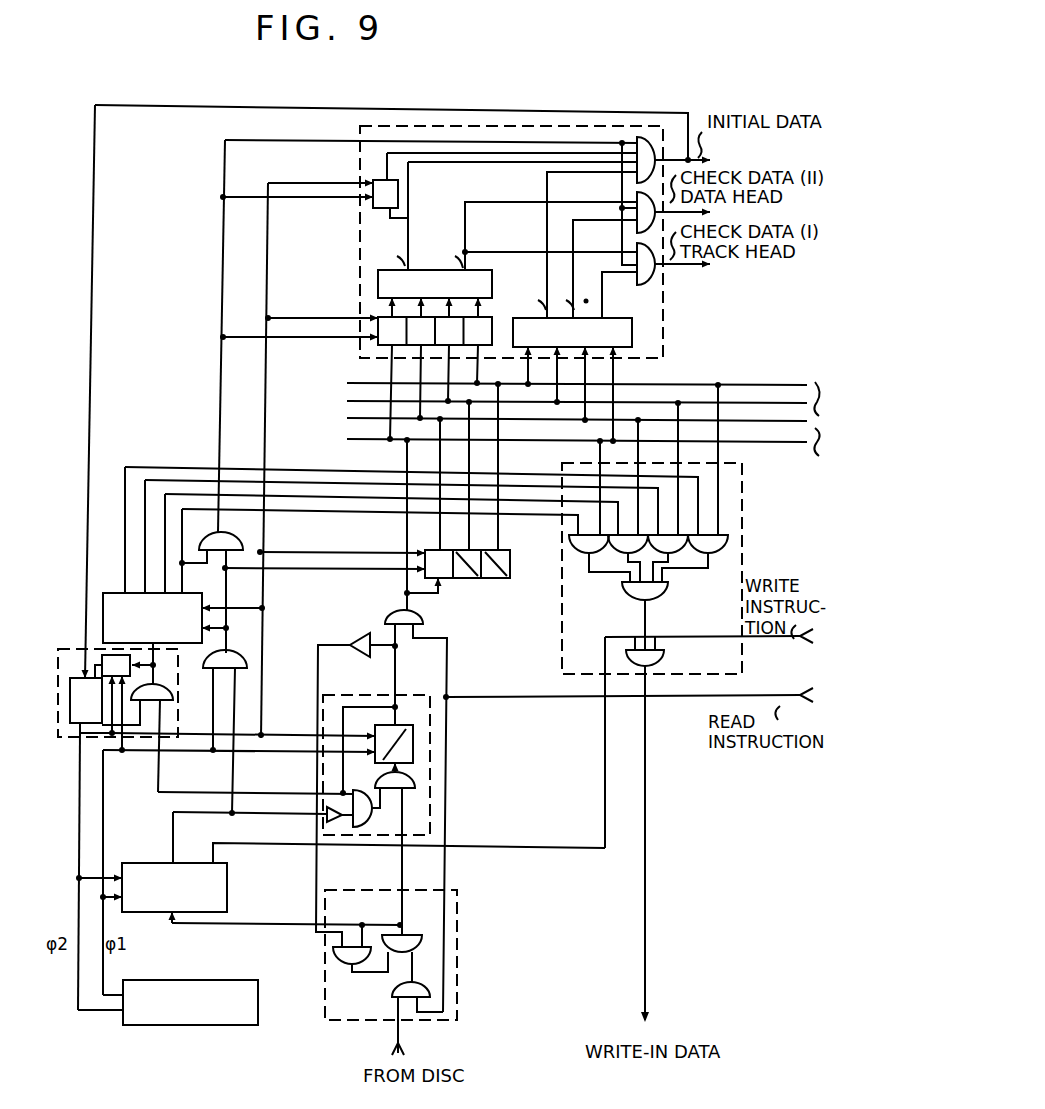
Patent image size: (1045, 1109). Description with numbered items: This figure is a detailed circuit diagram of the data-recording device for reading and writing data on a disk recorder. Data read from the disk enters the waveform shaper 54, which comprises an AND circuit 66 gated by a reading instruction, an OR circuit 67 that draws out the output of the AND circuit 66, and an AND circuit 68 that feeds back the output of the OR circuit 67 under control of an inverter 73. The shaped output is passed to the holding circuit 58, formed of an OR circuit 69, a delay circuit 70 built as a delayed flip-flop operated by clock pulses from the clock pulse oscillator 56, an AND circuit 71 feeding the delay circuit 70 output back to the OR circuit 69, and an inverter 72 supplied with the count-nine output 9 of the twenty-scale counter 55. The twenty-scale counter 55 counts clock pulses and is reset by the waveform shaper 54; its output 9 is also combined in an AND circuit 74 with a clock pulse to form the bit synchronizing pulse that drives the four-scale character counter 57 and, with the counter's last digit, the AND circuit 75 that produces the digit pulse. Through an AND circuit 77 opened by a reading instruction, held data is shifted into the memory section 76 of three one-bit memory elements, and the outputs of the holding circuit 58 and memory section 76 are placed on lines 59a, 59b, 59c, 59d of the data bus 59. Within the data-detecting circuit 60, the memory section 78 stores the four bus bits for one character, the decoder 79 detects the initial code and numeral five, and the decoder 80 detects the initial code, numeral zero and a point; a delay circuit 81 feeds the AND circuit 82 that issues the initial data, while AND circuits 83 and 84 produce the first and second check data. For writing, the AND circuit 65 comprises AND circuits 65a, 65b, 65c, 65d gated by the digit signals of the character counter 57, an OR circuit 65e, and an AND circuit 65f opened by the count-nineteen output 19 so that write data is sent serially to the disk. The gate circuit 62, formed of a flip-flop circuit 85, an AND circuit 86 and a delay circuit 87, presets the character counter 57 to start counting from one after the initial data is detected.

The count "9" output of the 20-scale counter 9 is at (175, 850).
The count "19" output of the 20-scale counter 19 is at (214, 858).
The waveform shaper 54 is at (394, 959).
The 20-scale counter 55 is at (340, 883).
The clock pulse oscillator 56 is at (262, 974).
The 4-scale character counter 57 is at (103, 595).
The holding circuit 58 is at (293, 815).
The data bus 59 is at (585, 417).
The data bus line 59a is at (750, 397).
The data bus line 59b is at (799, 403).
The data bus line 59c is at (758, 423).
The data bus line 59d is at (793, 445).
The data-detecting circuit 60 is at (594, 128).
The gate circuit 62 is at (126, 707).
The AND circuit 65 is at (652, 742).
The AND circuit 65a is at (726, 545).
The AND circuit 65b is at (675, 558).
The AND circuit 65c is at (614, 560).
The AND circuit 65d is at (569, 541).
The OR circuit 65e is at (652, 602).
The AND circuit 65f is at (664, 660).
The AND circuit 66 is at (432, 990).
The OR circuit 67 is at (414, 933).
The AND circuit 68 is at (334, 953).
The OR circuit 69 is at (415, 782).
The delay circuit 70 is at (413, 732).
The AND circuit 71 is at (277, 816).
The inverter 72 is at (325, 818).
The inverter 73 is at (355, 780).
The AND circuit 74 is at (247, 660).
The AND circuit 75 is at (243, 542).
The memory section 76 is at (470, 578).
The AND circuit 77 is at (423, 618).
The memory section 78 is at (378, 327).
The decoder 79 is at (492, 282).
The decoder 80 is at (592, 316).
The delay circuit 81 is at (398, 196).
The AND circuit 82 is at (640, 137).
The AND circuit 83 is at (650, 277).
The AND circuit 84 is at (632, 206).
The flip-flop circuit 85 is at (90, 735).
The AND circuit 86 is at (170, 690).
The delay circuit 87 is at (102, 656).